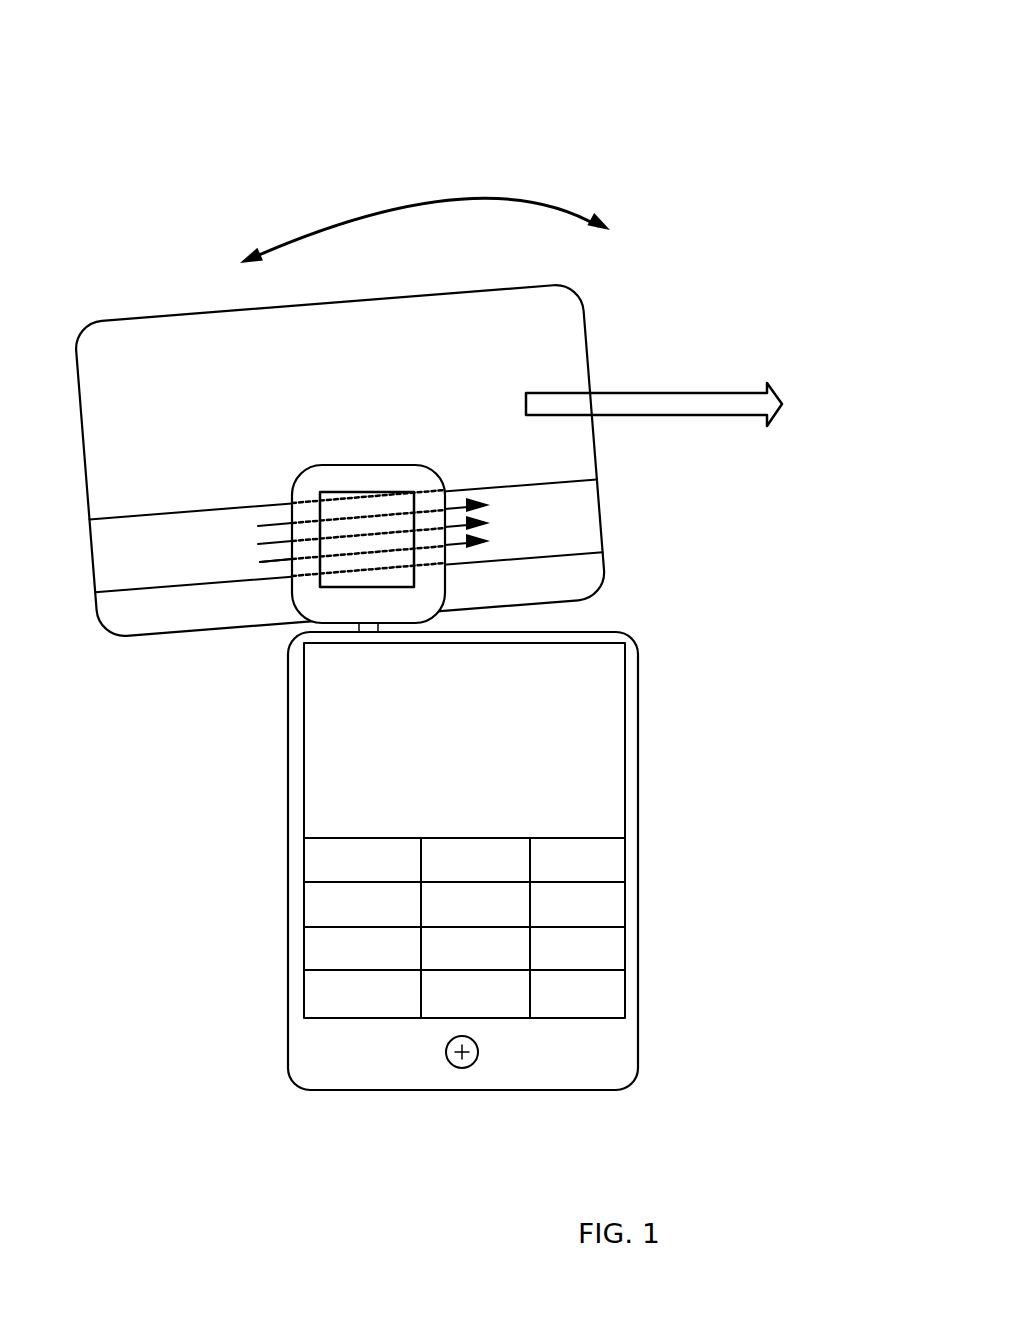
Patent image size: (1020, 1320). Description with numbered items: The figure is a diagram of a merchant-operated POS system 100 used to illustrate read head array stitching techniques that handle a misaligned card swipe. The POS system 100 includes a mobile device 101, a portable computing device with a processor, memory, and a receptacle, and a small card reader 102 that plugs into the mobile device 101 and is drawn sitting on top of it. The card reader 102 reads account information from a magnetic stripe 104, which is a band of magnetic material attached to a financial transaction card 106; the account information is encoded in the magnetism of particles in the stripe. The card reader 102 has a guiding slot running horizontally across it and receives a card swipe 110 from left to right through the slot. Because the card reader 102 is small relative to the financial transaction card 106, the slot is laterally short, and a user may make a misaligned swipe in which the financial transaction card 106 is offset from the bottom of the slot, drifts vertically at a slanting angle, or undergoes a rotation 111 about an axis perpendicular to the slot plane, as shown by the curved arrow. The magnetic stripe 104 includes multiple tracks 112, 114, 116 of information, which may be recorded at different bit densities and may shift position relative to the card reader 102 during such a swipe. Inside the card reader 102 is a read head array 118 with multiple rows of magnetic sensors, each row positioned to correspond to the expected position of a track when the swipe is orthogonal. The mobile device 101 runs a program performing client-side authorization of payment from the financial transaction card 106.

The POS system 100 is at (138, 66).
The mobile device 101 is at (288, 802).
The card reader 102 is at (433, 555).
The magnetic stripe 104 is at (563, 532).
The financial transaction card 106 is at (373, 434).
The card swipe 110 is at (673, 392).
The rotation 111 is at (563, 212).
The track 112 is at (258, 526).
The track 114 is at (270, 561).
The track 116 is at (492, 527).
The read head array 118 is at (368, 492).